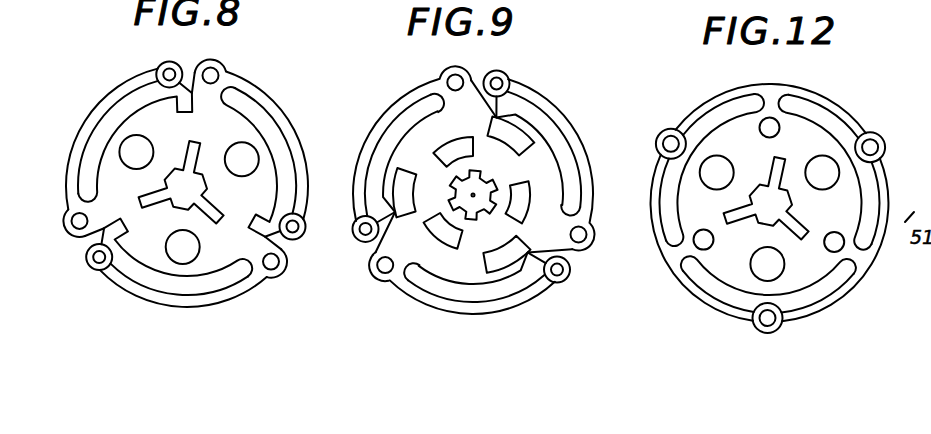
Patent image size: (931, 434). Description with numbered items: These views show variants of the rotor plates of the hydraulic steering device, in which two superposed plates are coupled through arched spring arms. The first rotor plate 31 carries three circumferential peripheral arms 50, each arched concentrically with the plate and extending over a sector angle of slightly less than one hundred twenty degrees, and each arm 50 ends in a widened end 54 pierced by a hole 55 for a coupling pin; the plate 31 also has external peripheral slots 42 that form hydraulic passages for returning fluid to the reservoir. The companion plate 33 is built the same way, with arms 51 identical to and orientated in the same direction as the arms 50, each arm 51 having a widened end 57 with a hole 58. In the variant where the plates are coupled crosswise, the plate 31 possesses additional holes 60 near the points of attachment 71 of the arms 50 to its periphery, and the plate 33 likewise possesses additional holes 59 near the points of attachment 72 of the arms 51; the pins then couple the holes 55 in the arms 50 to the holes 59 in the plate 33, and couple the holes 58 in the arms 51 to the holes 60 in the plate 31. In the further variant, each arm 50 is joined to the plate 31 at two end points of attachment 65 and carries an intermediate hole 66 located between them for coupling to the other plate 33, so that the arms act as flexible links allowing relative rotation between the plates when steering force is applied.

In FIG. 8, the circumferential peripheral arm 50 is at (88, 118).
In FIG. 12, the circumferential peripheral arm 50 is at (714, 108).
In FIG. 8, the first rotor plate 31 is at (256, 83).
In FIG. 12, the first rotor plate 31 is at (821, 90).
In FIG. 8, the additional hole 60 is at (216, 72).
In FIG. 8, the point of attachment 71 is at (230, 80).
In FIG. 8, the hole 55 is at (165, 67).
In FIG. 8, the widened end 54 is at (178, 70).
In FIG. 9, the arm 51 is at (566, 113).
In FIG. 9, the plate 33 is at (474, 72).
In FIG. 9, the additional hole 59 is at (447, 80).
In FIG. 9, the point of attachment 72 is at (438, 84).
In FIG. 9, the widened end 57 is at (510, 80).
In FIG. 9, the hole 58 is at (503, 80).
In FIG. 12, the end point of attachment 65 is at (772, 96).
In FIG. 12, the intermediate hole 66 is at (670, 139).
In FIG. 12, the external peripheral slot 42 is at (766, 119).